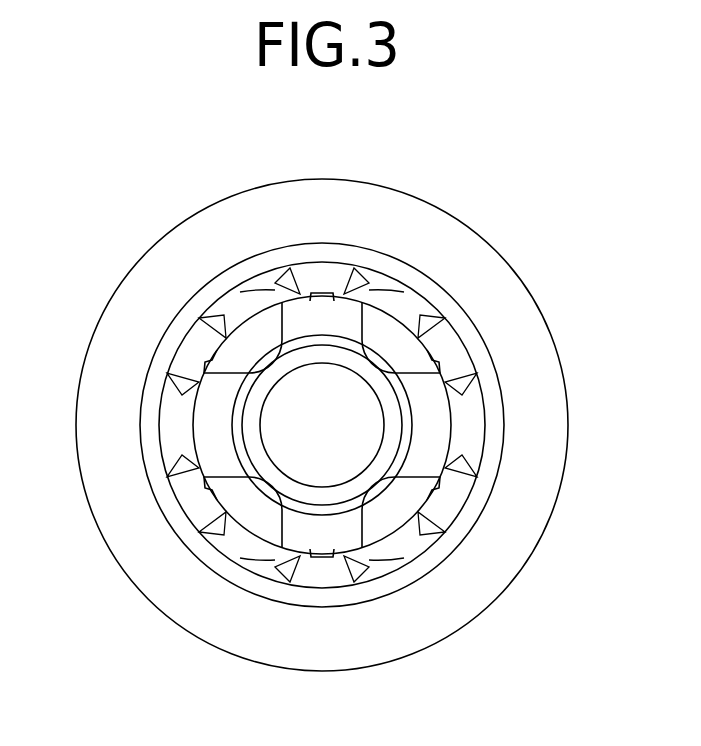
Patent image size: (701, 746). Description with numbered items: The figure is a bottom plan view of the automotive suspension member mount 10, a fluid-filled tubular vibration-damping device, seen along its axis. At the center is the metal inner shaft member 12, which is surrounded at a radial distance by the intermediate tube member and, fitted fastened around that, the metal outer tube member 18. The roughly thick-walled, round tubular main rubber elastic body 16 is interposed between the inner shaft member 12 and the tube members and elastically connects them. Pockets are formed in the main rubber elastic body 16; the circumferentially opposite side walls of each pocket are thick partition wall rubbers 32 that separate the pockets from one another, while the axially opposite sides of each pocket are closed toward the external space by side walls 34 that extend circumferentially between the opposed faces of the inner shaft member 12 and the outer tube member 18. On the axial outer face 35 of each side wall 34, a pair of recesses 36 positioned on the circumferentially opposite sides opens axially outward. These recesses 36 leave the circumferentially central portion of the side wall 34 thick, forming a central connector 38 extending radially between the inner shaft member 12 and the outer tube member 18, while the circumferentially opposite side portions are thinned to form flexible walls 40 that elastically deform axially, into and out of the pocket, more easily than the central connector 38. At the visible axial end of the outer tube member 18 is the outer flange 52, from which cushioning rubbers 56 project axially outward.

The suspension member mount 10 is at (552, 190).
The inner shaft member 12 is at (382, 388).
The main rubber elastic body 16 is at (198, 457).
The outer tube member 18 is at (158, 338).
The partition wall rubber 32 is at (207, 417).
The side wall 34 is at (352, 296).
The axial outer face 35 is at (303, 316).
The recess 36 is at (263, 317).
The central connector 38 is at (330, 313).
The flexible wall 40 is at (242, 357).
The outer flange 52 is at (525, 350).
The cushioning rubber 56 is at (475, 442).